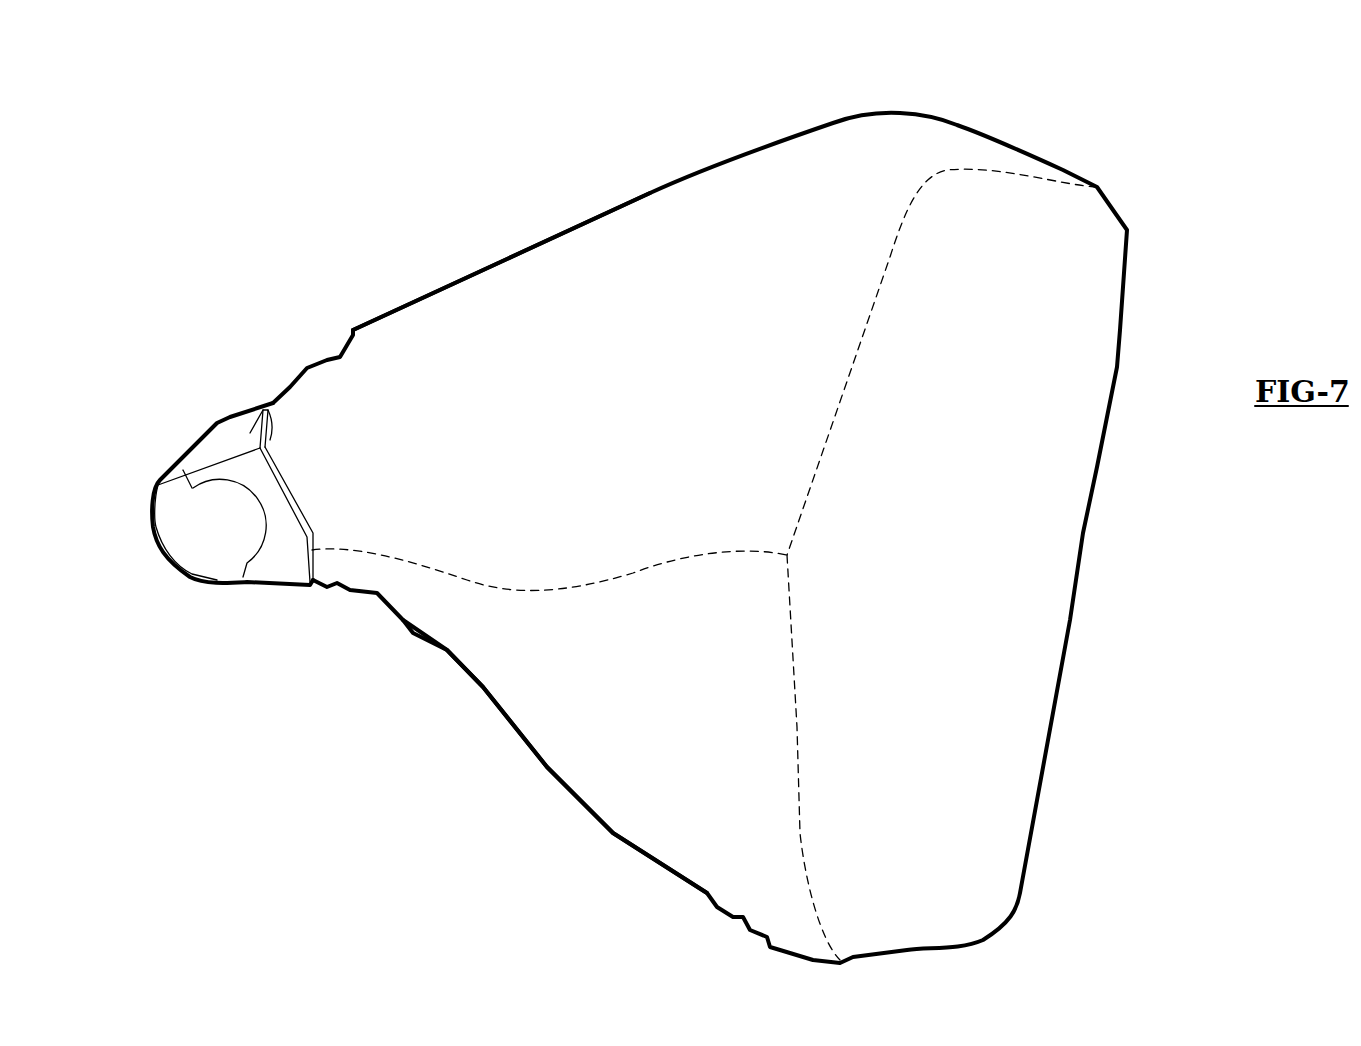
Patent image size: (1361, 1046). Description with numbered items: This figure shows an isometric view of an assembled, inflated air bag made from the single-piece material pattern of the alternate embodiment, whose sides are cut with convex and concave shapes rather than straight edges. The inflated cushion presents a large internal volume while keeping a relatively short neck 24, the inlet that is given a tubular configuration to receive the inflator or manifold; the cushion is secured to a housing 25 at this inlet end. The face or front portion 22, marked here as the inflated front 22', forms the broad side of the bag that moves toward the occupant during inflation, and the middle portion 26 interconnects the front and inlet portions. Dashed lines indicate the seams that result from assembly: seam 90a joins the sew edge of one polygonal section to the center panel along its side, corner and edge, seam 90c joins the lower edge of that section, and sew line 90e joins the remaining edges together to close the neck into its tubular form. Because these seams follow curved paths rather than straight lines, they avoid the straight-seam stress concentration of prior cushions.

The front portion 22 is at (738, 538).
The front portion 22' is at (509, 206).
The neck 24 is at (303, 408).
The housing 25 is at (220, 440).
The middle portion 26 is at (557, 737).
The sew seam 90a is at (870, 320).
The sew seam 90c is at (797, 727).
The sew line 90e is at (593, 587).